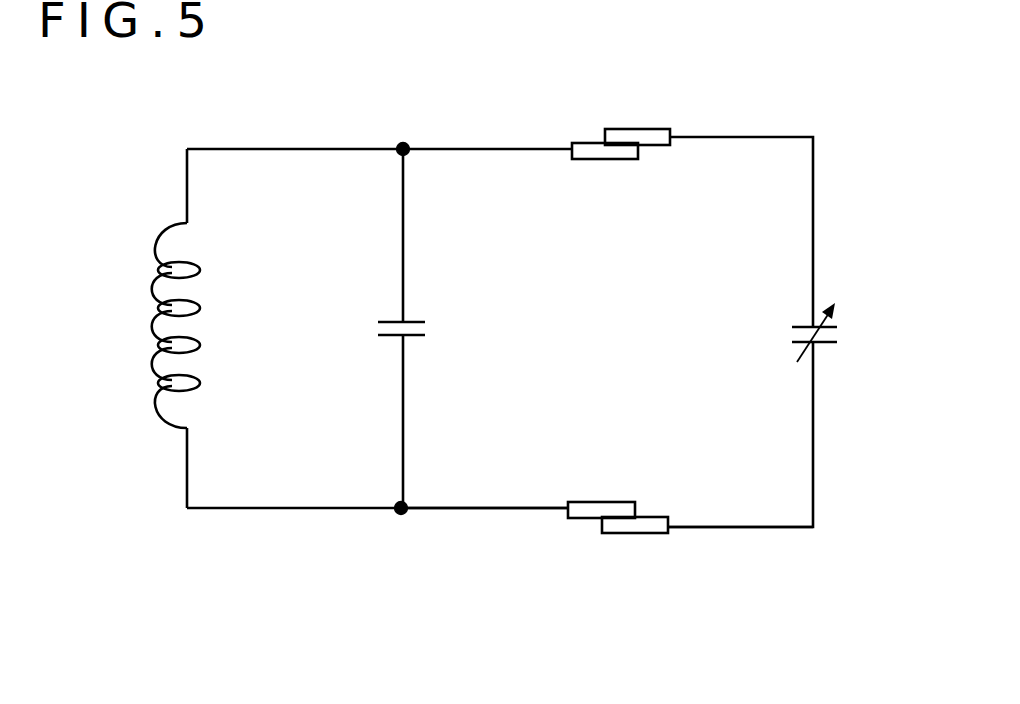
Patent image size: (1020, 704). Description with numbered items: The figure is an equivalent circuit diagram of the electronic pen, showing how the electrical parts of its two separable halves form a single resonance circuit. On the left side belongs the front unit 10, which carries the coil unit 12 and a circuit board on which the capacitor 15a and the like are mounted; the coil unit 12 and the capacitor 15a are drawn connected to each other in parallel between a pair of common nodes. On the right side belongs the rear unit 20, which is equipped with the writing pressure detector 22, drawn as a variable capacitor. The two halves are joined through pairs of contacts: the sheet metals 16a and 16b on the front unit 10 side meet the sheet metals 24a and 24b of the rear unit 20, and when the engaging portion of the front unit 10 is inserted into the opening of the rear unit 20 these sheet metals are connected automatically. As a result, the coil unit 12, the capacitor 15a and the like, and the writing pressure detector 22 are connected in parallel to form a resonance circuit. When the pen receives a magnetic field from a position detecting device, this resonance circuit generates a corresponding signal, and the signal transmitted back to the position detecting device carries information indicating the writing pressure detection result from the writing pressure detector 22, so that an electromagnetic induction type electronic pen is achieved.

The front unit 10 is at (442, 538).
The coil unit 12 is at (130, 329).
The capacitor 15a is at (378, 329).
The sheet metal 16a is at (603, 160).
The sheet metal 16b is at (593, 501).
The rear unit 20 is at (766, 546).
The writing pressure detector 22 is at (840, 335).
The sheet metal 24a is at (633, 129).
The sheet metal 24b is at (623, 534).